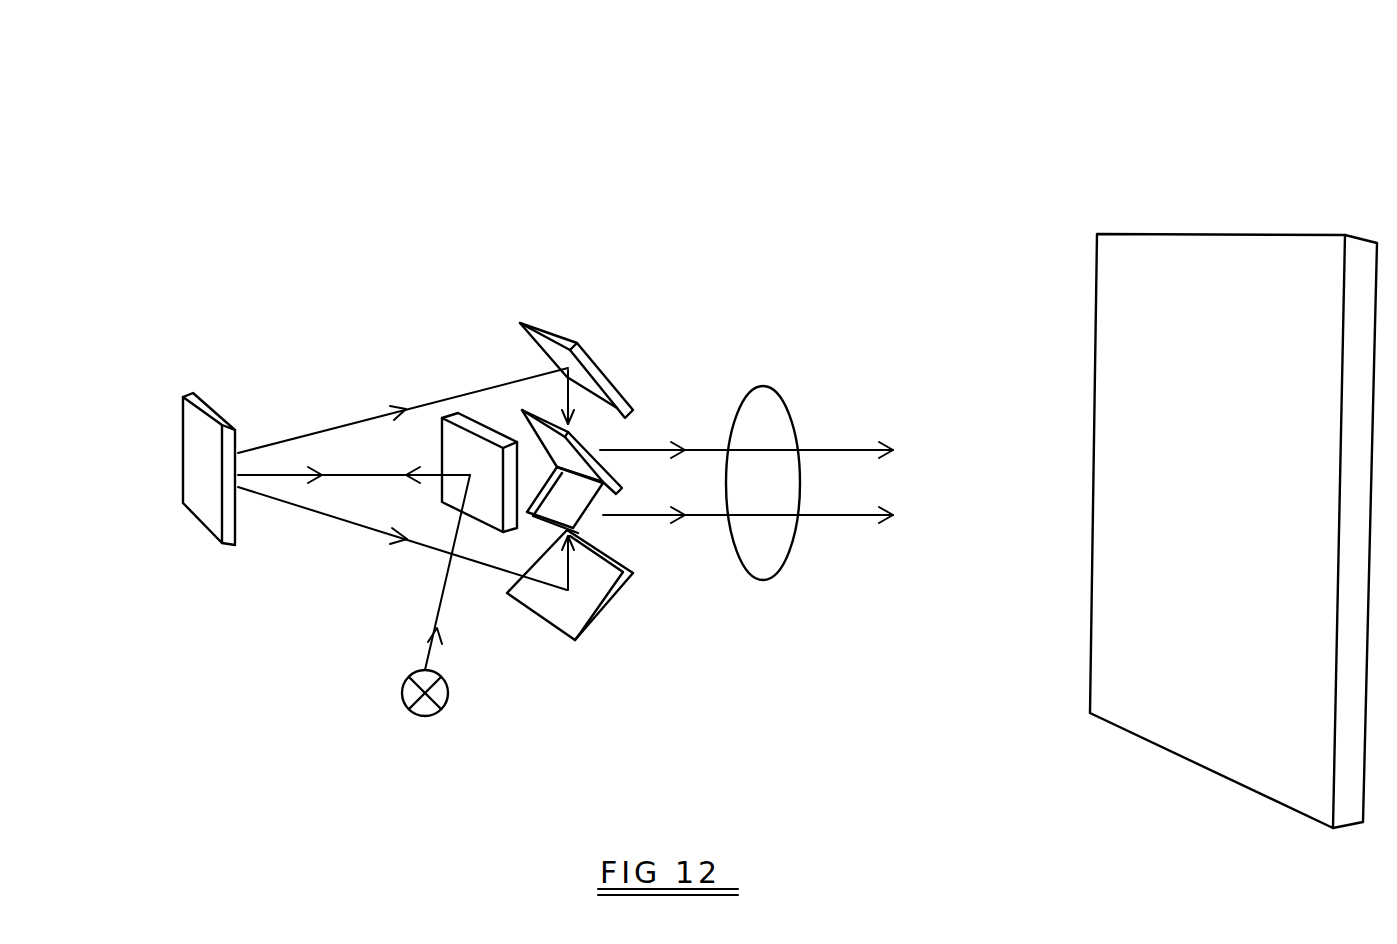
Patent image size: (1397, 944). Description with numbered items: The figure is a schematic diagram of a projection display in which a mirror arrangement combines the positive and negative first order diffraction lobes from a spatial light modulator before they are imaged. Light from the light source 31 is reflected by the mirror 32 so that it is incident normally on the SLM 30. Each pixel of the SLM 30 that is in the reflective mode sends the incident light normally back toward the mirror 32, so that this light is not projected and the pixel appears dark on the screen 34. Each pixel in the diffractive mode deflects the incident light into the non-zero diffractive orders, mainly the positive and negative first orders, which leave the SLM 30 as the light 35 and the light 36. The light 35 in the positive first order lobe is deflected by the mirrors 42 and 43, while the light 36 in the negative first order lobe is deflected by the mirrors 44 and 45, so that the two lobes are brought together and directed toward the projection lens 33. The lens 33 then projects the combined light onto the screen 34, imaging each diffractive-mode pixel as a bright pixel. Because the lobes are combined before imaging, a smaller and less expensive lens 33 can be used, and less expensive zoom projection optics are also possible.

The SLM 30 is at (193, 477).
The light source 31 is at (403, 697).
The mirror 32 is at (447, 433).
The projection lens 33 is at (763, 387).
The screen 34 is at (1173, 253).
The light ray 35 is at (313, 428).
The light ray 36 is at (327, 517).
The mirror 42 is at (552, 330).
The mirror 43 is at (598, 447).
The mirror 44 is at (587, 640).
The mirror 45 is at (610, 512).